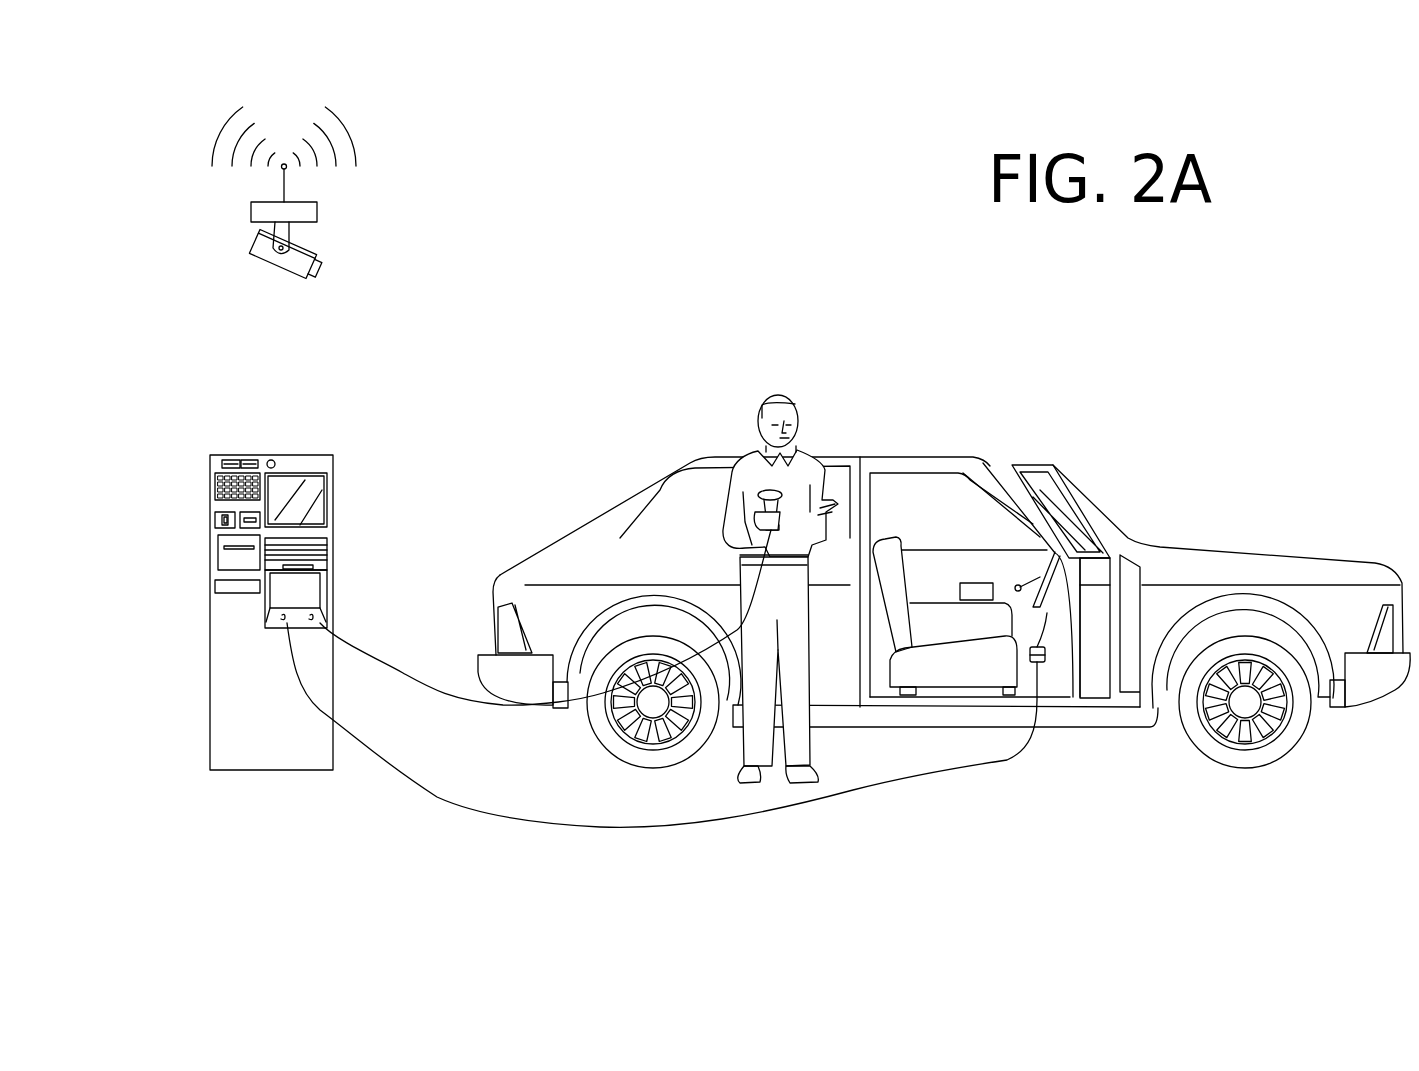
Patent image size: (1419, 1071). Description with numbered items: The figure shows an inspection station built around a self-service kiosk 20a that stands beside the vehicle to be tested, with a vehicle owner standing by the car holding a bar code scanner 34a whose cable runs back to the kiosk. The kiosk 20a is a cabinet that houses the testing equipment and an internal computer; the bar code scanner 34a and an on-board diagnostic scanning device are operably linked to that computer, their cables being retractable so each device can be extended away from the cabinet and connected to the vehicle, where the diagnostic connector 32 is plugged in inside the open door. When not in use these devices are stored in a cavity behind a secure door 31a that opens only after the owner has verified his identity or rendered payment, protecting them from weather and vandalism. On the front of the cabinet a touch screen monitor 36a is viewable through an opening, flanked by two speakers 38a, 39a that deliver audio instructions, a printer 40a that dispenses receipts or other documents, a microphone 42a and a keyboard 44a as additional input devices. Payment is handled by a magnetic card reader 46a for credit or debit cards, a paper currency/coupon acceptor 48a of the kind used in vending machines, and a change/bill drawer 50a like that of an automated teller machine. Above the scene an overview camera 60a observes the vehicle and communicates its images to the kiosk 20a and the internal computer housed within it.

The kiosk 20a is at (310, 453).
The secure door 31a is at (320, 560).
The vehicle diagnostic connector 32 is at (1042, 662).
The bar code scanner 34a is at (753, 470).
The touch screen monitor 36a is at (320, 483).
The speaker 38a is at (223, 455).
The speaker 39a is at (245, 457).
The printer 40a is at (225, 562).
The microphone 42a is at (271, 458).
The keyboard 44a is at (215, 487).
The magnetic card reader 46a is at (220, 525).
The paper currency/coupon acceptor 48a is at (258, 523).
The change/bill drawer 50a is at (233, 590).
The overview camera 60a is at (312, 247).